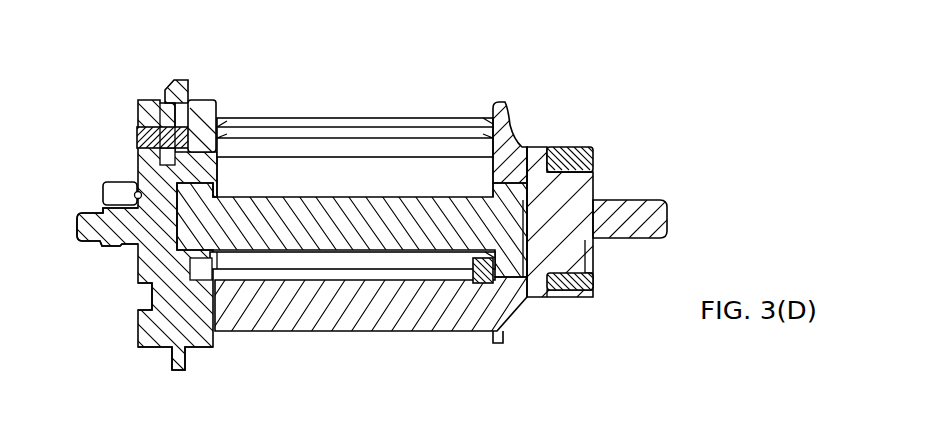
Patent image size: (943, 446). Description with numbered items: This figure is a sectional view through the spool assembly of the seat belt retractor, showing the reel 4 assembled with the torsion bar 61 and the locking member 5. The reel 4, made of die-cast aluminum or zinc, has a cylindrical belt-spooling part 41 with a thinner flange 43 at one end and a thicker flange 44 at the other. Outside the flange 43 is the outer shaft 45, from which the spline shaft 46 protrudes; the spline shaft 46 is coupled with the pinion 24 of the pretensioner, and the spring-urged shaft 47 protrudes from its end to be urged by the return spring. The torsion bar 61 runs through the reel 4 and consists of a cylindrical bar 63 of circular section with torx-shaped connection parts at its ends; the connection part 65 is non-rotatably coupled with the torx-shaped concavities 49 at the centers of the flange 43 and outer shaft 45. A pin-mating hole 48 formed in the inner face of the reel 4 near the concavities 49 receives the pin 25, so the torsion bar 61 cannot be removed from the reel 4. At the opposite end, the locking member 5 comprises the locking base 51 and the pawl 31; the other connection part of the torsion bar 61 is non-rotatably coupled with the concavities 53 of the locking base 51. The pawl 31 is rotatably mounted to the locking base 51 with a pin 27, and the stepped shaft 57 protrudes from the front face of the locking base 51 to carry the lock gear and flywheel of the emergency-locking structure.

The reel 4 is at (402, 110).
The locking member 5 is at (128, 93).
The pinion 24 is at (571, 138).
The pin 25 is at (474, 287).
The pin 27 is at (138, 138).
The pawl 31 is at (153, 95).
The belt-spooling part 41 is at (318, 117).
The flange 43 is at (497, 100).
The flange 44 is at (203, 100).
The outer shaft 45 is at (530, 297).
The spline shaft 46 is at (593, 297).
The spring-urged shaft 47 is at (633, 198).
The pin-mating hole 48 is at (508, 278).
The concavities 49 is at (588, 180).
The locking base 51 is at (143, 333).
The concavities 53 is at (195, 280).
The stepped shaft 57 is at (92, 242).
The torsion bar 61 is at (398, 266).
The bar 63 is at (348, 283).
The connection part 65 is at (243, 280).